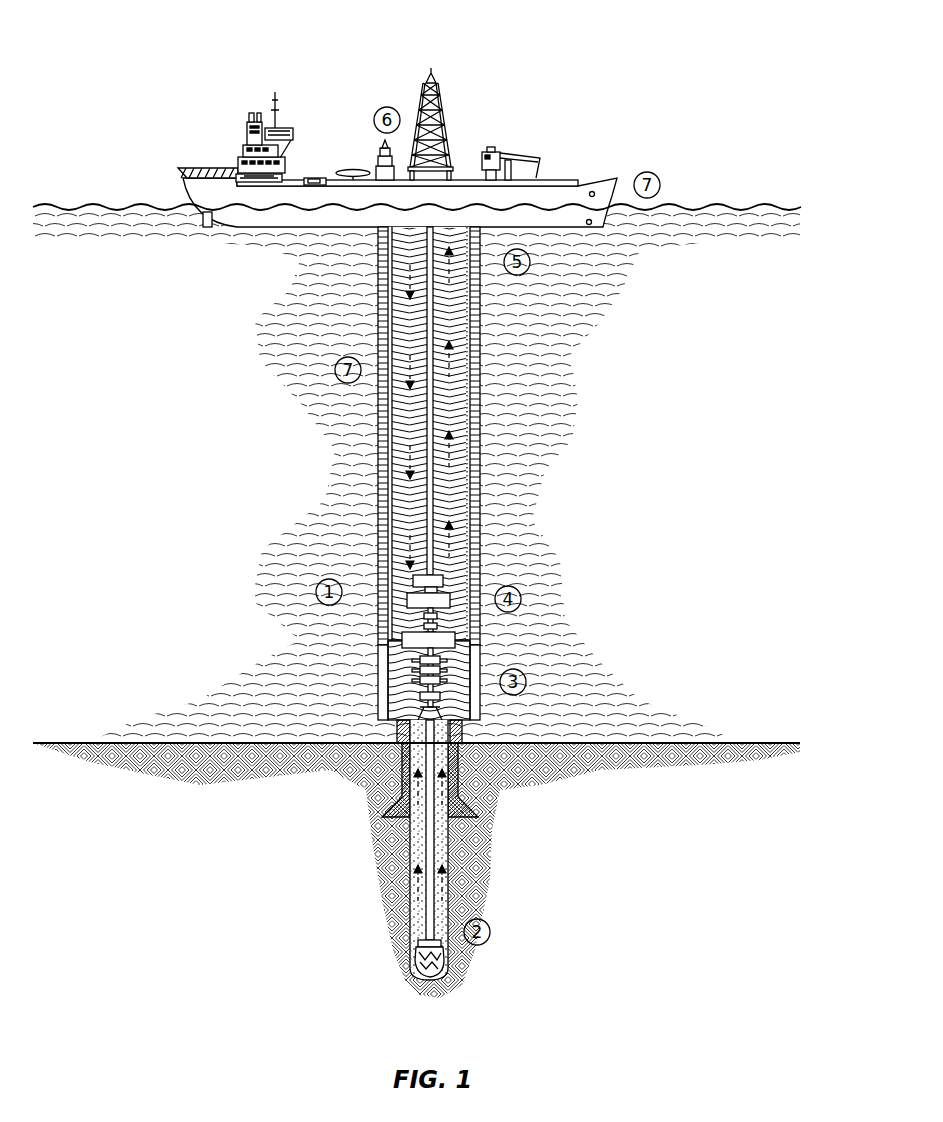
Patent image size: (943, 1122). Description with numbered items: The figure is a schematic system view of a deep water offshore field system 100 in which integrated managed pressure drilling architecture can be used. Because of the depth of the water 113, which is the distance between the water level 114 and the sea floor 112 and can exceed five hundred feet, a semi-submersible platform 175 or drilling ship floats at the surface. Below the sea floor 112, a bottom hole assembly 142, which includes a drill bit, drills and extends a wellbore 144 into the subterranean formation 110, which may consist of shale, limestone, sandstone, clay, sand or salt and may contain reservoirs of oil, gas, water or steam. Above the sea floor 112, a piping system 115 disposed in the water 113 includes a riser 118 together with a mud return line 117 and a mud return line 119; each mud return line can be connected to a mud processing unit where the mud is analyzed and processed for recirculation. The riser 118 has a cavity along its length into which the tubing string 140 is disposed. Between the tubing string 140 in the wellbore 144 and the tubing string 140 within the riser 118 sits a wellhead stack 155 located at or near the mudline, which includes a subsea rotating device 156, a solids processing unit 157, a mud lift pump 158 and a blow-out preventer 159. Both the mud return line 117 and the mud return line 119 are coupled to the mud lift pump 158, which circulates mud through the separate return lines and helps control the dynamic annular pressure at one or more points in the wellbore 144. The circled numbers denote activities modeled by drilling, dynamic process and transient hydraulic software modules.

The deep water offshore field system 100 is at (680, 52).
The semi-submersible platform 175 is at (194, 135).
The water level 114 is at (723, 203).
The water 113 is at (578, 427).
The sea floor 112 is at (753, 742).
The subterranean formation 110 is at (488, 850).
The piping system 115 is at (431, 473).
The mud return line 117 is at (387, 355).
The riser 118 is at (433, 410).
The mud return line 119 is at (467, 332).
The wellhead stack 155 is at (421, 624).
The subsea rotating device 156 is at (443, 580).
The solids processing unit 157 is at (450, 600).
The mud lift pump 158 is at (455, 640).
The blow-out preventer 159 is at (447, 668).
The wellbore 144 is at (387, 856).
The tubing string 140 is at (423, 928).
The bottom hole assembly 142 is at (415, 962).